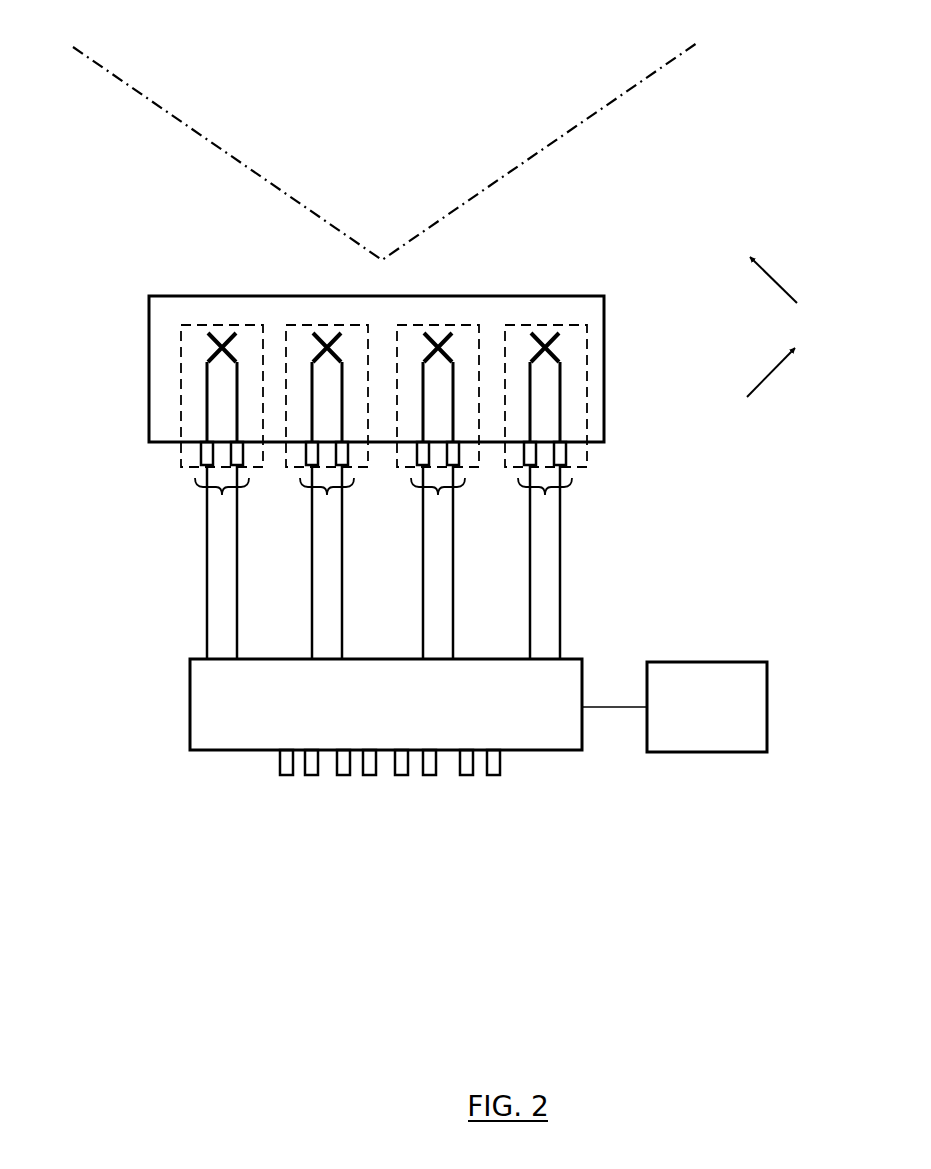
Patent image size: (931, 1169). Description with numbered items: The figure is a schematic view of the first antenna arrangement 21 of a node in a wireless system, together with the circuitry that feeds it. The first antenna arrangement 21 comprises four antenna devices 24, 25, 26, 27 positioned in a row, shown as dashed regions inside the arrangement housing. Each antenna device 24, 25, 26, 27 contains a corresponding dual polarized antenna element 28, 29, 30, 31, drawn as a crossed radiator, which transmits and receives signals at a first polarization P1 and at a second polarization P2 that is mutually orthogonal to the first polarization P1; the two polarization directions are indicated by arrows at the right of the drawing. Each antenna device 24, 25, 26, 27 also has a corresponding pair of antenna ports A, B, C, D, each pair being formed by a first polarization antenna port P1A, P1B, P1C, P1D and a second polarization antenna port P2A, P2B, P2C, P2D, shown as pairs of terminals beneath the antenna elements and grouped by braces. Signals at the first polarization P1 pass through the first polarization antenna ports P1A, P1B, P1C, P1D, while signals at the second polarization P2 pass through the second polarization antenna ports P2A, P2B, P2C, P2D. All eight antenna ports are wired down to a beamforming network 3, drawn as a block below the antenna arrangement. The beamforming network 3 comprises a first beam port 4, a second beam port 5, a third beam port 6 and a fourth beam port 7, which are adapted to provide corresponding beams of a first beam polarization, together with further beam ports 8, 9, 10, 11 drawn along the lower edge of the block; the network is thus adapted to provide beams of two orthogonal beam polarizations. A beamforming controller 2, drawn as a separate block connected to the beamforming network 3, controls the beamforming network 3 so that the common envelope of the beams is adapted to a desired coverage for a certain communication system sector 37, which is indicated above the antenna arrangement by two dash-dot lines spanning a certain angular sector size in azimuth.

The beamforming controller 2 is at (687, 727).
The beamforming network 3 is at (383, 720).
The first beam port 4 is at (284, 772).
The second beam port 5 is at (312, 772).
The third beam port 6 is at (344, 772).
The fourth beam port 7 is at (370, 772).
The output terminal 8 is at (401, 772).
The output terminal 9 is at (430, 772).
The output terminal 10 is at (466, 772).
The output terminal 11 is at (493, 772).
The first antenna arrangement 21 is at (160, 310).
The antenna device 24 is at (180, 362).
The antenna device 25 is at (317, 325).
The antenna device 26 is at (465, 325).
The antenna device 27 is at (590, 357).
The dual polarized antenna element 28 is at (222, 322).
The dual polarized antenna element 29 is at (327, 322).
The dual polarized antenna element 30 is at (438, 322).
The dual polarized antenna element 31 is at (545, 322).
The communication system sector 37 is at (163, 60).
The first polarization P1 is at (777, 370).
The second polarization P2 is at (780, 287).
The first polarization antenna port P1A is at (207, 452).
The second polarization antenna port P2A is at (232, 463).
The pair of antenna ports A is at (222, 495).
The first polarization antenna port P1B is at (312, 455).
The second polarization antenna port P2B is at (342, 455).
The pair of antenna ports B is at (327, 495).
The first polarization antenna port P1C is at (423, 455).
The second polarization antenna port P2C is at (453, 455).
The pair of antenna ports C is at (438, 495).
The first polarization antenna port P1D is at (530, 462).
The second polarization antenna port P2D is at (560, 453).
The pair of antenna ports D is at (545, 495).